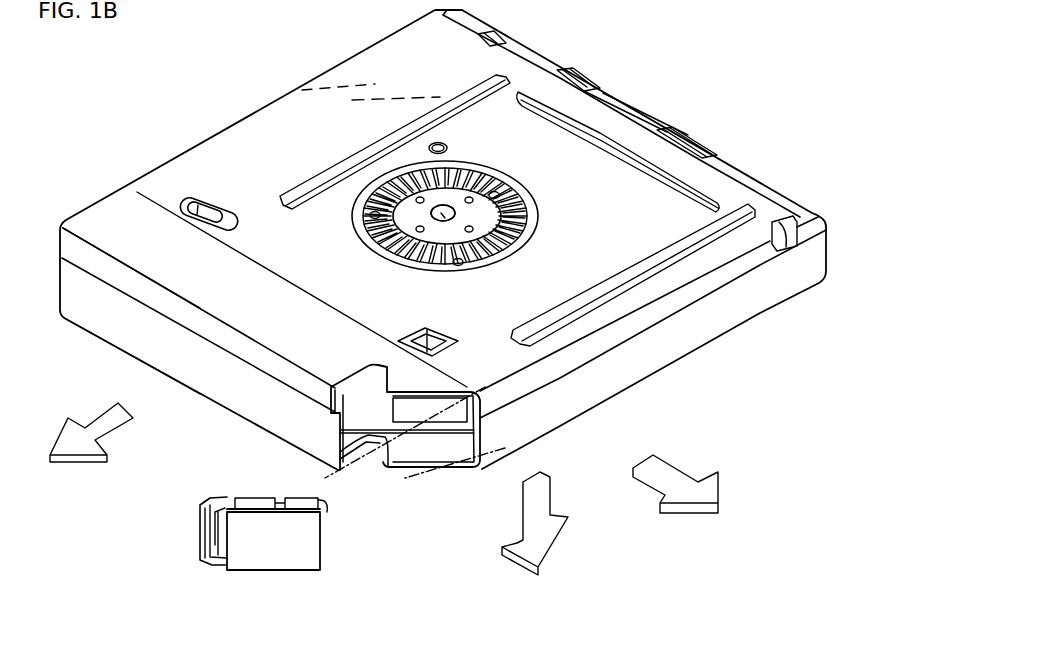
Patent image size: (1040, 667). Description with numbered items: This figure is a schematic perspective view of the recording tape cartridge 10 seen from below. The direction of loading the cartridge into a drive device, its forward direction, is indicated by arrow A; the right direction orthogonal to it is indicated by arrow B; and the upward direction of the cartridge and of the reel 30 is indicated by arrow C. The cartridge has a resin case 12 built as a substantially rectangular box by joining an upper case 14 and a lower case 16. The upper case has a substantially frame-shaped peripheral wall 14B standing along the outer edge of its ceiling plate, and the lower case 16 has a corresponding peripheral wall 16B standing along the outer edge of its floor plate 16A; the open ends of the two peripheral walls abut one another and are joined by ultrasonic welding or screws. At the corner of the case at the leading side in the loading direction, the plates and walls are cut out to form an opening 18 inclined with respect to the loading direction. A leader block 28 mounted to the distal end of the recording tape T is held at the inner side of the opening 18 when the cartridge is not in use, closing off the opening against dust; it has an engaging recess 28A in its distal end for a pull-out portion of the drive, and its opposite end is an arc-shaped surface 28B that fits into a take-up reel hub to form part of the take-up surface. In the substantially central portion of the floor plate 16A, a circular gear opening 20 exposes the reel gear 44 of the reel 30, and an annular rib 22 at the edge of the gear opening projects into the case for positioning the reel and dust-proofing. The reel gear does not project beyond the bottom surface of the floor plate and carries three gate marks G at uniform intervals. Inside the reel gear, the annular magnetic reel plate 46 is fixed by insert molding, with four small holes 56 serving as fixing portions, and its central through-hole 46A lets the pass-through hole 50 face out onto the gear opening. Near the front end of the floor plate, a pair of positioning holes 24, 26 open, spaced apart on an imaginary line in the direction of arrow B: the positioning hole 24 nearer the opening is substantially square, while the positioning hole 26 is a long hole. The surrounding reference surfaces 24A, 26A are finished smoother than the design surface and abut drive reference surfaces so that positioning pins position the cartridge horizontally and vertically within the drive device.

The recording tape cartridge 10 is at (443, 239).
The case 12 is at (443, 241).
The upper case 14 is at (444, 351).
The peripheral wall 14B is at (272, 412).
The lower case 16 is at (443, 240).
The floor plate 16A is at (238, 313).
The peripheral wall 16B is at (253, 362).
The opening 18 is at (362, 390).
The gear opening 20 is at (470, 198).
The annular rib 22 is at (621, 108).
The positioning hole 24 is at (420, 323).
The reference surface 24A is at (449, 311).
The positioning hole 26 is at (219, 195).
The reference surface 26A is at (197, 206).
The leader block 28 is at (263, 523).
The engaging recess 28A is at (200, 526).
The arc-shaped surface 28B is at (322, 495).
The reel 30 is at (539, 194).
The reel gear 44 is at (482, 200).
The reel plate 46 is at (510, 189).
The through-hole 46A is at (455, 214).
The pass-through hole 50 is at (529, 229).
The small holes 56 is at (351, 177).
The arrow A is at (102, 416).
The arrow B is at (667, 470).
The arrow C is at (547, 507).
The gate marks G is at (352, 215).
The recording tape T is at (363, 485).